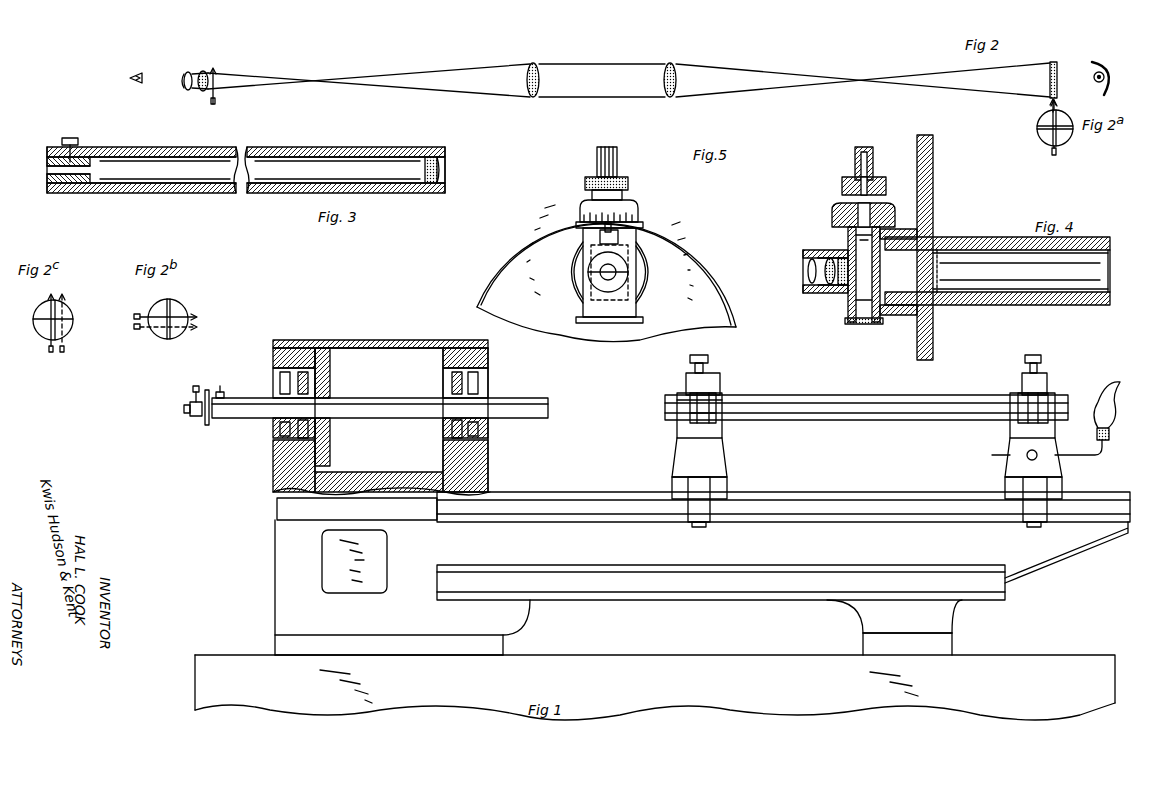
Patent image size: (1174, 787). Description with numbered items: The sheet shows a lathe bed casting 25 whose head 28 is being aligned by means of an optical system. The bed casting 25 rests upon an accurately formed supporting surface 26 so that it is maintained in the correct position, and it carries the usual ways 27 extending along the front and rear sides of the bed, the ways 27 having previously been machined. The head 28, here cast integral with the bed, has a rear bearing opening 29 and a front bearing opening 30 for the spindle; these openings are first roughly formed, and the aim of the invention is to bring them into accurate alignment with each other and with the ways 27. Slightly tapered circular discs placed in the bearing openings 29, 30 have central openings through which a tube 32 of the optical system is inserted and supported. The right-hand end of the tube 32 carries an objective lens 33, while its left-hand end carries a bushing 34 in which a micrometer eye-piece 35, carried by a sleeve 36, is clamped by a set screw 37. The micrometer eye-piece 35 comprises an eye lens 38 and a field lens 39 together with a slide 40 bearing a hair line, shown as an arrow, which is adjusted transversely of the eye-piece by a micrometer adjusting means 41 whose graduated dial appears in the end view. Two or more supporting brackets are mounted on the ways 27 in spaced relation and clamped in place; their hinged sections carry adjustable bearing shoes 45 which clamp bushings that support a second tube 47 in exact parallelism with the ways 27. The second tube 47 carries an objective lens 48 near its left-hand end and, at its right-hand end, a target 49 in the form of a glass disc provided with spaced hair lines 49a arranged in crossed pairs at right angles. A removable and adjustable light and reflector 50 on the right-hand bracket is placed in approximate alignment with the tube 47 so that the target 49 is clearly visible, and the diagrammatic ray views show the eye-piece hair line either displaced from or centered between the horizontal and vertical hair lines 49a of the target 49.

In FIG. 1, the bed casting 25 is at (782, 561).
In FIG. 1, the supporting surface 26 is at (655, 687).
In FIG. 1, the ways 27 is at (800, 493).
In FIG. 1, the head 28 is at (325, 342).
In FIG. 1, the rear bearing opening 29 is at (330, 365).
In FIG. 1, the front bearing opening 30 is at (448, 368).
In FIG. 3, the tube 32 is at (265, 148).
In FIG. 1, the tube 32 is at (382, 418).
In FIG. 2, the objective lens 33 is at (540, 64).
In FIG. 3, the objective lens 33 is at (448, 165).
In FIG. 3, the bushing 34 is at (95, 150).
In FIG. 4, the micrometer eye-piece 35 is at (840, 296).
In FIG. 1, the micrometer eye-piece 35 is at (193, 418).
In FIG. 4, the sleeve 36 is at (968, 240).
In FIG. 3, the set screw 37 is at (72, 136).
In FIG. 1, the set screw 37 is at (222, 392).
In FIG. 2, the eye lens 38 is at (188, 72).
In FIG. 4, the eye lens 38 is at (803, 268).
In FIG. 2, the field lens 39 is at (214, 66).
In FIG. 4, the field lens 39 is at (826, 258).
In FIG. 5, the slide 40 is at (612, 318).
In FIG. 4, the slide 40 is at (864, 320).
In FIG. 5, the micrometer adjusting means 41 is at (640, 200).
In FIG. 4, the micrometer adjusting means 41 is at (835, 203).
In FIG. 1, the adjustable bearing shoes 45 is at (712, 372).
In FIG. 1, the second tube 47 is at (858, 420).
In FIG. 2, the objective lens 48 is at (664, 66).
In FIG. 2, the target 49 is at (1056, 60).
In FIG. 2A, the target 49 is at (1044, 142).
In FIG. 2A, the hair lines 49a is at (1066, 142).
In FIG. 2, the light and reflector 50 is at (1100, 61).
In FIG. 1, the light and reflector 50 is at (1100, 455).